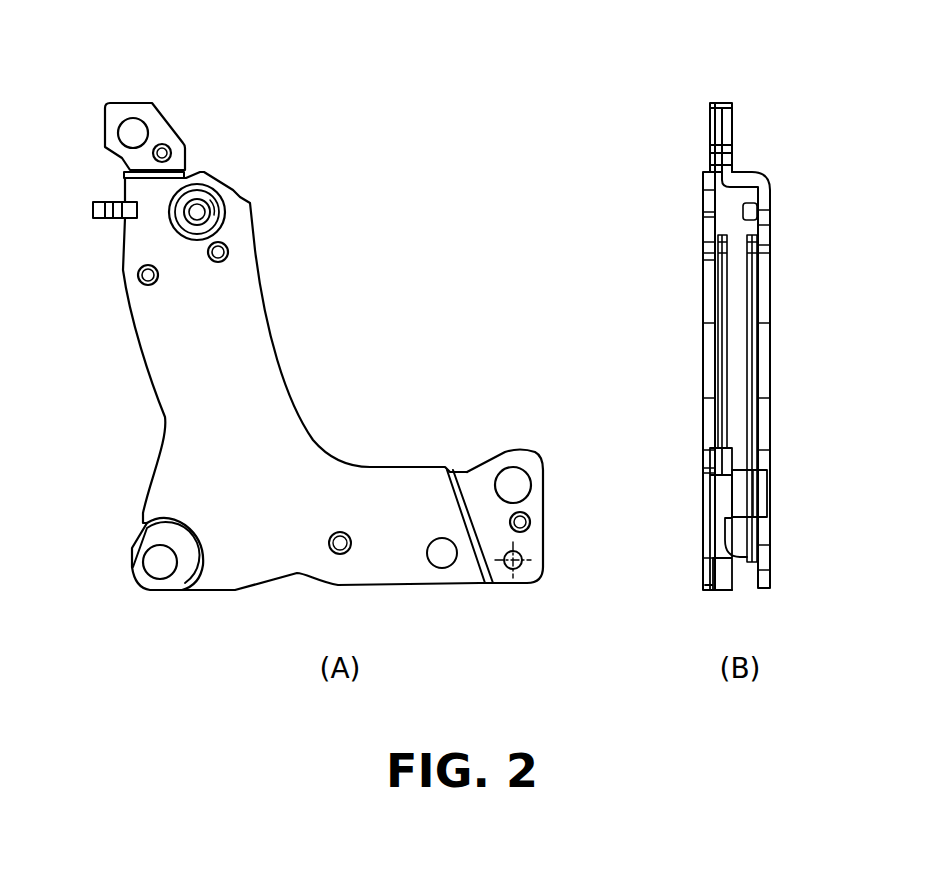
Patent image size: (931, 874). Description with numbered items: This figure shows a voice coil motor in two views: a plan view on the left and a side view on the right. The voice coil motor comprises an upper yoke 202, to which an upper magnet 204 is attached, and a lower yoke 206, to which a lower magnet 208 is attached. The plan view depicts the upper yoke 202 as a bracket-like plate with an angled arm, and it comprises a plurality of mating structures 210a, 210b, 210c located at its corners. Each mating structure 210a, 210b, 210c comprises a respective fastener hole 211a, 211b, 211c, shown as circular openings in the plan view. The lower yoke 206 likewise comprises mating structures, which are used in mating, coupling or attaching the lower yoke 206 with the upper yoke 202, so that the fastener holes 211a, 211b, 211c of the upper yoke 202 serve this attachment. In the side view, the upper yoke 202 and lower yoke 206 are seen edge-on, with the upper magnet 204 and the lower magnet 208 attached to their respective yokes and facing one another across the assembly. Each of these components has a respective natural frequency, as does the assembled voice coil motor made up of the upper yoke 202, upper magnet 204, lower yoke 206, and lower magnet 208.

The upper yoke 202 is at (250, 340).
The upper magnet 204 is at (720, 310).
The lower yoke 206 is at (728, 123).
The lower magnet 208 is at (750, 337).
The mating structure 210a is at (160, 130).
The mating structure 210b is at (178, 577).
The mating structure 210c is at (527, 572).
The fastener hole 211a is at (133, 127).
The fastener hole 211b is at (157, 562).
The fastener hole 211c is at (512, 482).